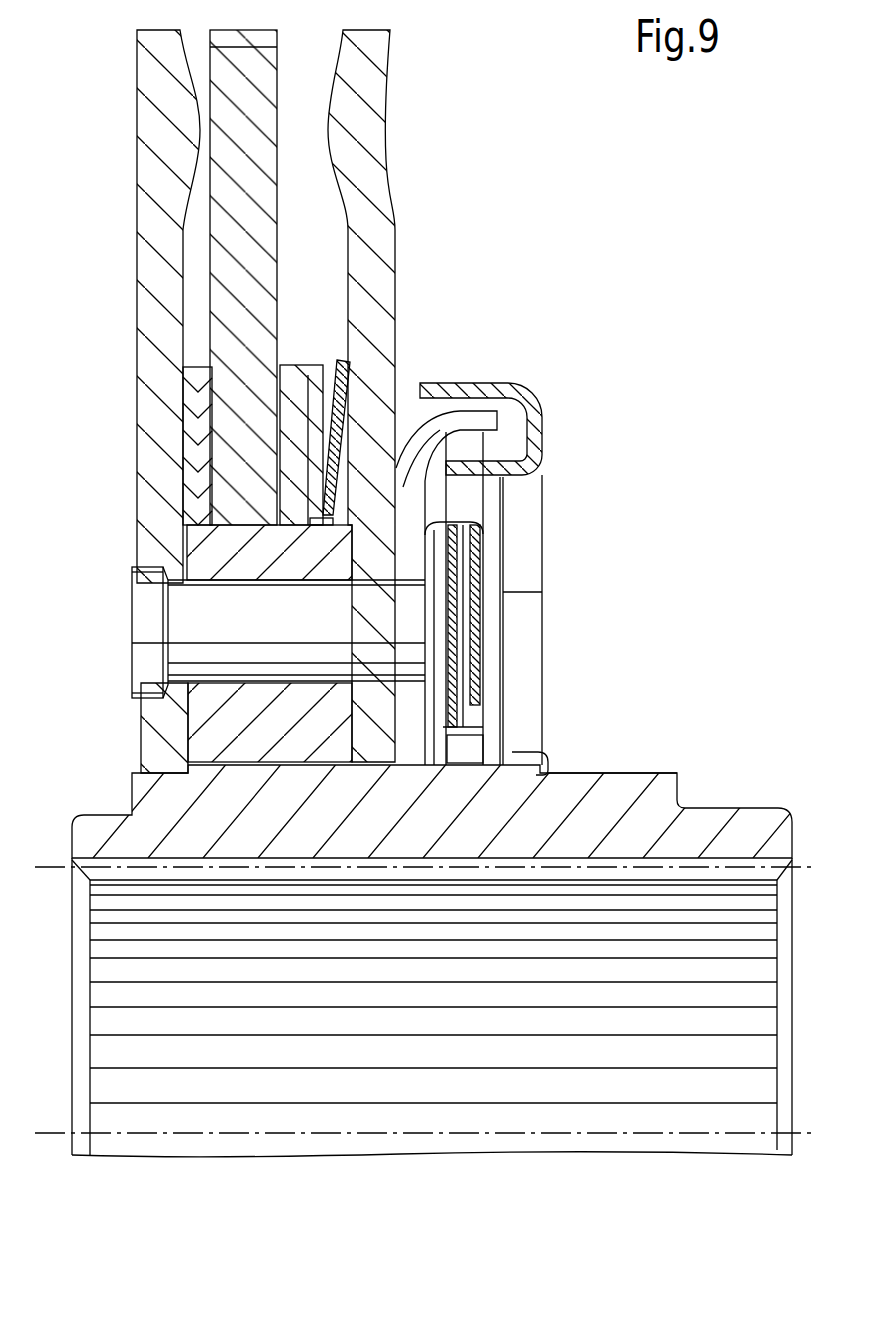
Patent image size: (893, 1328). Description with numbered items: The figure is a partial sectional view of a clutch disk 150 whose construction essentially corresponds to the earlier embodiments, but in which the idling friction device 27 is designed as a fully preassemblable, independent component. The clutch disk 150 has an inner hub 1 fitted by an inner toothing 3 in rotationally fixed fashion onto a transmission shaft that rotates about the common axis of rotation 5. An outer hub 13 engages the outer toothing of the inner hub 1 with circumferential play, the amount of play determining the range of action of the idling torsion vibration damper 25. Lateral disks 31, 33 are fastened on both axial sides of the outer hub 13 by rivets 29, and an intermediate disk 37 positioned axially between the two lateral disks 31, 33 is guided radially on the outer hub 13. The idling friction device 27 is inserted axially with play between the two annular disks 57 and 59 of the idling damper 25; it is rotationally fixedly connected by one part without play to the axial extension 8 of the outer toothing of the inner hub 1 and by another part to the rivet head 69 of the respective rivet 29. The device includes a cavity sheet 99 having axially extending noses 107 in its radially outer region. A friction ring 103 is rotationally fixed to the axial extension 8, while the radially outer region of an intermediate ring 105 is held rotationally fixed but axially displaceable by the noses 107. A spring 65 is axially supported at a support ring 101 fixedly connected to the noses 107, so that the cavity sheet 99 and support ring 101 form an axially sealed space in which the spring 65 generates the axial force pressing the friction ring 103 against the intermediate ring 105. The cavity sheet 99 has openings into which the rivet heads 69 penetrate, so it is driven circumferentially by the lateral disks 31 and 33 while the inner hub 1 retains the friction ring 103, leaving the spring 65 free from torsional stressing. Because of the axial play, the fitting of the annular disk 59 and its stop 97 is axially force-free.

The inner hub 1 is at (105, 825).
The inner toothing 3 is at (110, 930).
The axis of rotation 5 is at (190, 1135).
The axial extension 8 is at (550, 762).
The outer hub 13 is at (227, 547).
The idling torsion vibration damper 25 is at (540, 340).
The idling friction device 27 is at (538, 407).
The rivet 29 is at (213, 610).
The lateral disk 31 is at (162, 108).
The lateral disk 33 is at (367, 82).
The intermediate disk 37 is at (262, 133).
The annular disk 57 is at (427, 440).
The annular disk 59 is at (503, 590).
The spring 65 is at (483, 555).
The rivet head 69 is at (503, 688).
The stop 97 is at (540, 752).
The cavity sheet 99 is at (485, 712).
The support ring 101 is at (465, 516).
The friction ring 103 is at (480, 662).
The intermediate ring 105 is at (457, 628).
The noses 107 is at (451, 498).
The clutch disk 150 is at (478, 260).